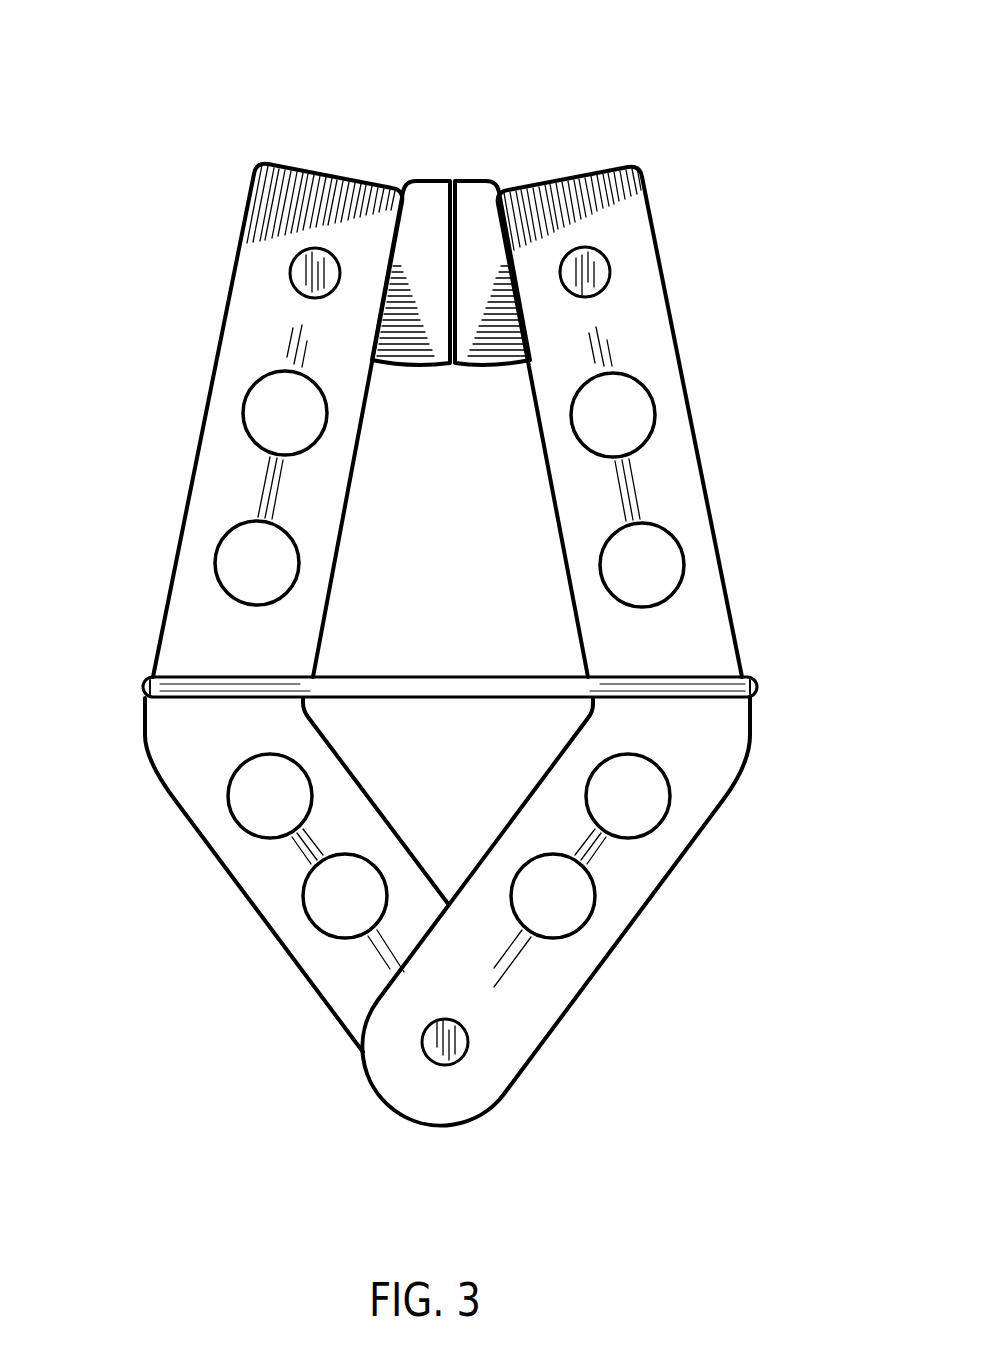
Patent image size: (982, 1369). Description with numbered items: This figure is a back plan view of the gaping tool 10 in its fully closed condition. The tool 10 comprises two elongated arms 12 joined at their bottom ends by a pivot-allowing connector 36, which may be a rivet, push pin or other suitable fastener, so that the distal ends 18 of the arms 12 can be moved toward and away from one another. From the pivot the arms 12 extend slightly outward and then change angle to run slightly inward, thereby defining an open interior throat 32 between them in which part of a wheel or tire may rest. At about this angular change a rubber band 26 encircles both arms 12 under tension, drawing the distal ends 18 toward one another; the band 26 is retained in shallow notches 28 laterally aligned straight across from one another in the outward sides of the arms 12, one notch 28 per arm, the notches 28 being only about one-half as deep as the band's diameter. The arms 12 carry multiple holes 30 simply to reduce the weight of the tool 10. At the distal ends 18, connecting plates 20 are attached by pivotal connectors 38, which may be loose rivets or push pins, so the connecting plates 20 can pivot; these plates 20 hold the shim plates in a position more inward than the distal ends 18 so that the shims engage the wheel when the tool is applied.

The tool 10 is at (165, 105).
The elongated arms 12 is at (210, 377).
The distal ends 18 is at (313, 165).
The connecting plate 20 is at (485, 188).
The rubber band 26 is at (440, 687).
The notches 28 is at (147, 672).
The holes 30 is at (665, 565).
The open interior throat 32 is at (433, 502).
The connector 36 is at (460, 1055).
The pivotal connectors 38 is at (295, 270).